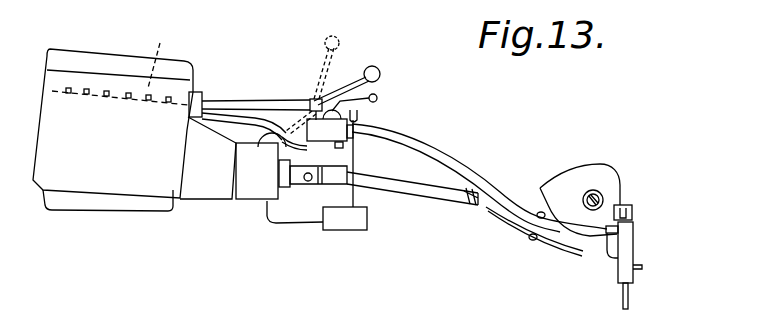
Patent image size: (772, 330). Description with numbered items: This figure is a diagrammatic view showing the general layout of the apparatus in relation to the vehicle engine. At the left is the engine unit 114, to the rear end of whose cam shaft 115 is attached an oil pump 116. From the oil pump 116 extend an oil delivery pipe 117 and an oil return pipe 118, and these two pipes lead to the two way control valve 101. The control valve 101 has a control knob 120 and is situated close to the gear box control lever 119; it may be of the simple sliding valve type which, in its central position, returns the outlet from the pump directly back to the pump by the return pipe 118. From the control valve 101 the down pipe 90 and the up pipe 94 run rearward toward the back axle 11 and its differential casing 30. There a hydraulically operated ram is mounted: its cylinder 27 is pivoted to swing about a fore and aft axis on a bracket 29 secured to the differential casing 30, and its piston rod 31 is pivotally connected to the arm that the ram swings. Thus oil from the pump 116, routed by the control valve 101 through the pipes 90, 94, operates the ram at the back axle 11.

The engine unit 114 is at (93, 50).
The cam shaft 115 is at (170, 50).
The oil pump 116 is at (200, 96).
The oil delivery pipe 117 is at (245, 103).
The oil return pipe 118 is at (229, 113).
The gear box control lever 119 is at (342, 38).
The control knob 120 is at (380, 98).
The control valve 101 is at (353, 143).
The up pipe 94 is at (482, 151).
The down pipe 90 is at (488, 212).
The differential casing 30 is at (578, 172).
The back axle 11 is at (594, 190).
The bracket 29 is at (628, 205).
The cylinder 27 is at (616, 270).
The piston rod 31 is at (621, 300).